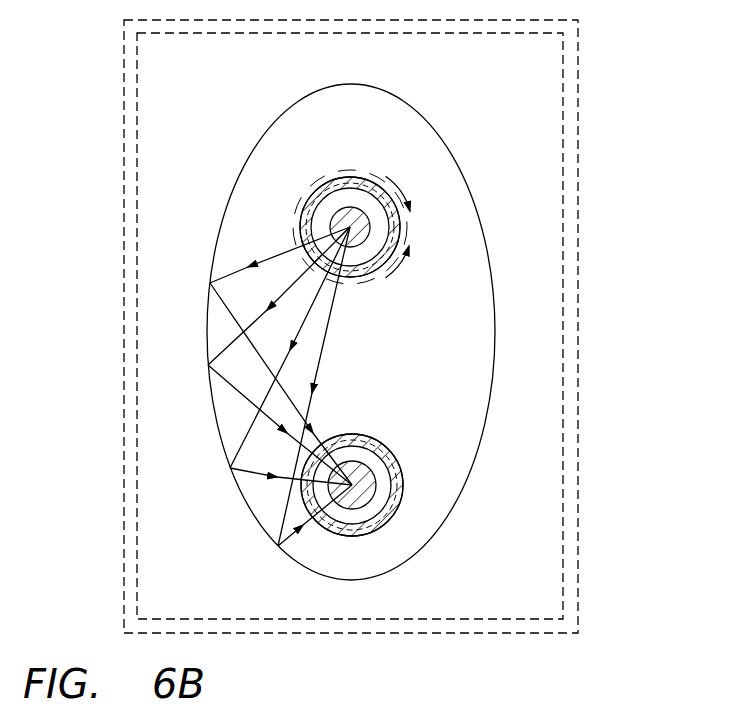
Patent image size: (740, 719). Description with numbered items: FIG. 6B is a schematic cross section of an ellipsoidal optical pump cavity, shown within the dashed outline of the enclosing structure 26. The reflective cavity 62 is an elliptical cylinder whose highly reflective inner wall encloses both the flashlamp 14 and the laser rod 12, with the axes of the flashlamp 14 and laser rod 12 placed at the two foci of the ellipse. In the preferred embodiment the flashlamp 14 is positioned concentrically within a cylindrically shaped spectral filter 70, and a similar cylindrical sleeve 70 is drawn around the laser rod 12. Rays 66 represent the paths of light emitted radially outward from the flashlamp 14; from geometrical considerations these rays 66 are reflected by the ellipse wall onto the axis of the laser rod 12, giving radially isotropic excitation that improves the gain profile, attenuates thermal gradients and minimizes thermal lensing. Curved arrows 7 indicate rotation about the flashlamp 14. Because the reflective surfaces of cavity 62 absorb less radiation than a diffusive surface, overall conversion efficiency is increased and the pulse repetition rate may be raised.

The lighting fixture housing 26 is at (627, 150).
The reflective cavity 62 is at (412, 106).
The flashlamp 14 is at (350, 206).
The laser rod 12 is at (351, 461).
The spectral filter 70 is at (381, 270).
The rotation direction arrows 7 is at (403, 227).
The rays 66 is at (322, 365).